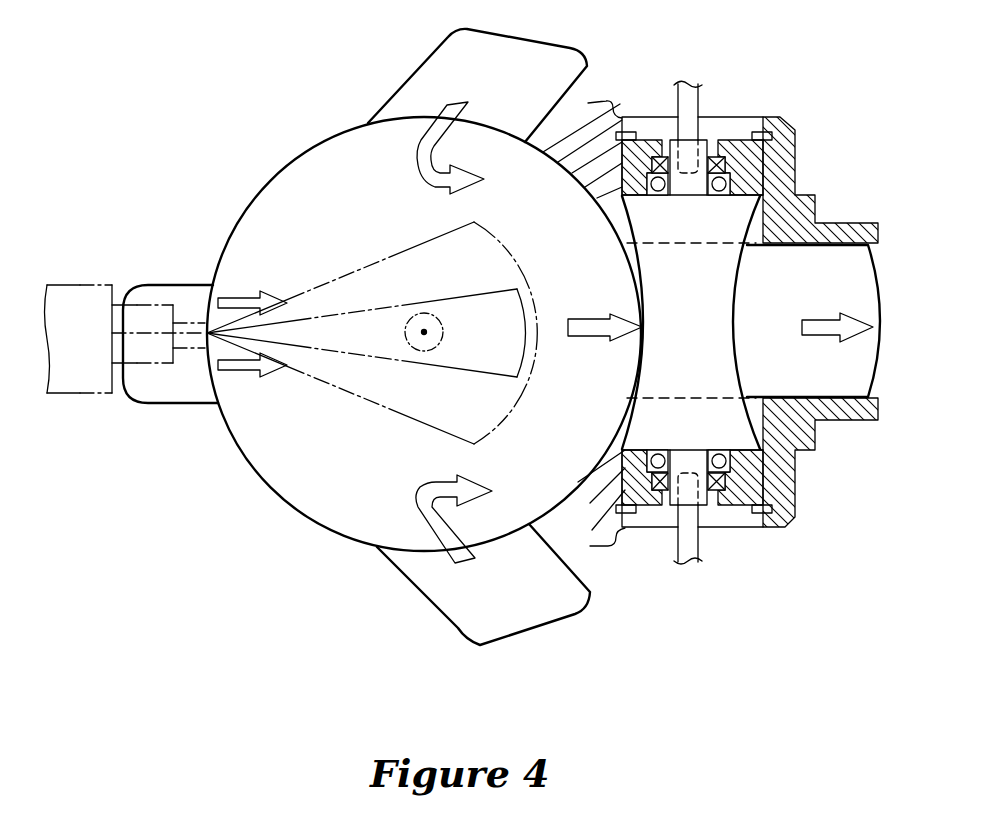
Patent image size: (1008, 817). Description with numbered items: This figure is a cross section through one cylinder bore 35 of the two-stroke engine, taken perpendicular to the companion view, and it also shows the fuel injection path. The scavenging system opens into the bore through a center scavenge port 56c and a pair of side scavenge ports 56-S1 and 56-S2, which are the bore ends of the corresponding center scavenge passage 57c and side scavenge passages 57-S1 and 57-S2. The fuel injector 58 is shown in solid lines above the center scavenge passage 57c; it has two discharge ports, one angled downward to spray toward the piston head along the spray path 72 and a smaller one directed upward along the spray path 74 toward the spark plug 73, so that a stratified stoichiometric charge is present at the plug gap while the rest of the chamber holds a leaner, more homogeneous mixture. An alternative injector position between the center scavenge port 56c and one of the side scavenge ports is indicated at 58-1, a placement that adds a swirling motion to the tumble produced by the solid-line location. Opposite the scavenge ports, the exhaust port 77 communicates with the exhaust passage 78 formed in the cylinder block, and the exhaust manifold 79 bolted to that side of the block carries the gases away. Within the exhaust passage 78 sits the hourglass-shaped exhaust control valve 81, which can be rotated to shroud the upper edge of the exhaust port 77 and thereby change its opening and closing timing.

The alternate fuel injector location 58-1 is at (338, 127).
The cylinder bore 35 is at (268, 477).
The spray path 72 is at (414, 425).
The spark plug 73 is at (442, 318).
The spray path 74 is at (451, 364).
The center scavenge port 56c is at (213, 383).
The side scavenge port 56-S1 is at (488, 130).
The side scavenge port 56-S2 is at (503, 530).
The side scavenge passage 57-S1 is at (560, 53).
The side scavenge passage 57-S2 is at (463, 620).
The center scavenge passage 57c is at (162, 400).
The fuel injector 58 is at (102, 280).
The exhaust port 77 is at (630, 282).
The exhaust passage 78 is at (800, 358).
The exhaust manifold 79 is at (856, 430).
The exhaust control valve 81 is at (727, 271).